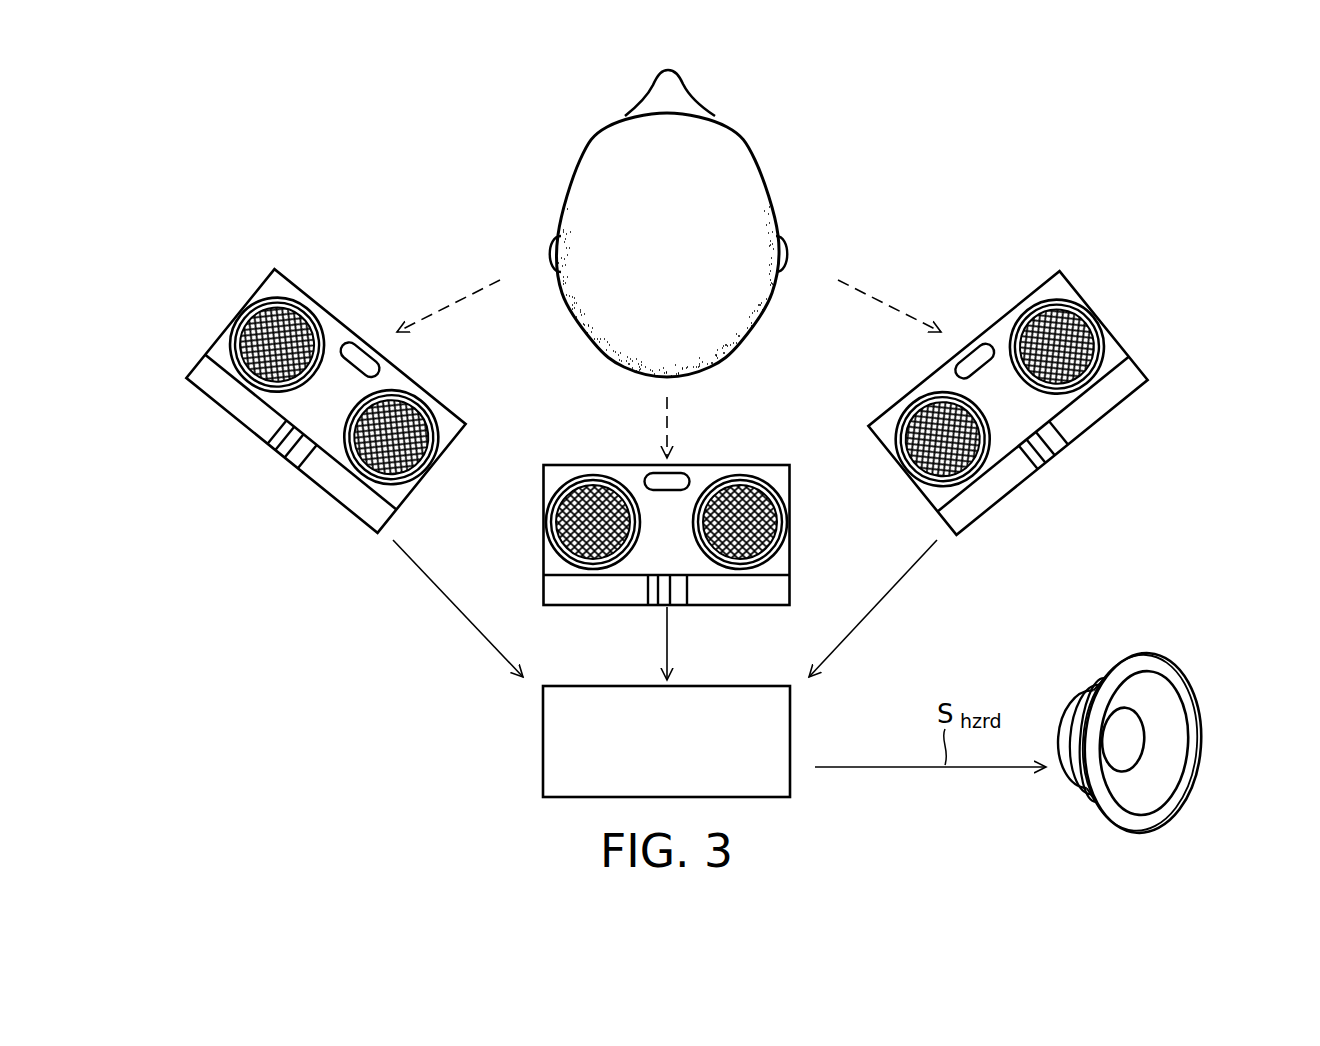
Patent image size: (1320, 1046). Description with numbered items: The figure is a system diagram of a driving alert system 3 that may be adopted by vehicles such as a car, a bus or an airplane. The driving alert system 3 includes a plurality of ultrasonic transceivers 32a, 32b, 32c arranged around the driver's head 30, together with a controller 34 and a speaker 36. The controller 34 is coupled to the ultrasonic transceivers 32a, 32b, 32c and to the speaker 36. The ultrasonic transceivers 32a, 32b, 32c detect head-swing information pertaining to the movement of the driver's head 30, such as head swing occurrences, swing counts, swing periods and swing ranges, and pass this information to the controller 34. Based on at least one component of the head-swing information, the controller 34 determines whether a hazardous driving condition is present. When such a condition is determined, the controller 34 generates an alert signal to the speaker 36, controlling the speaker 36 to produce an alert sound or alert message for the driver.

The driving alert system 3 is at (978, 160).
The head 30 is at (763, 176).
The ultrasonic transceiver 32a is at (245, 424).
The ultrasonic transceiver 32b is at (790, 522).
The ultrasonic transceiver 32c is at (1087, 428).
The controller 34 is at (790, 715).
The speaker 36 is at (1202, 744).